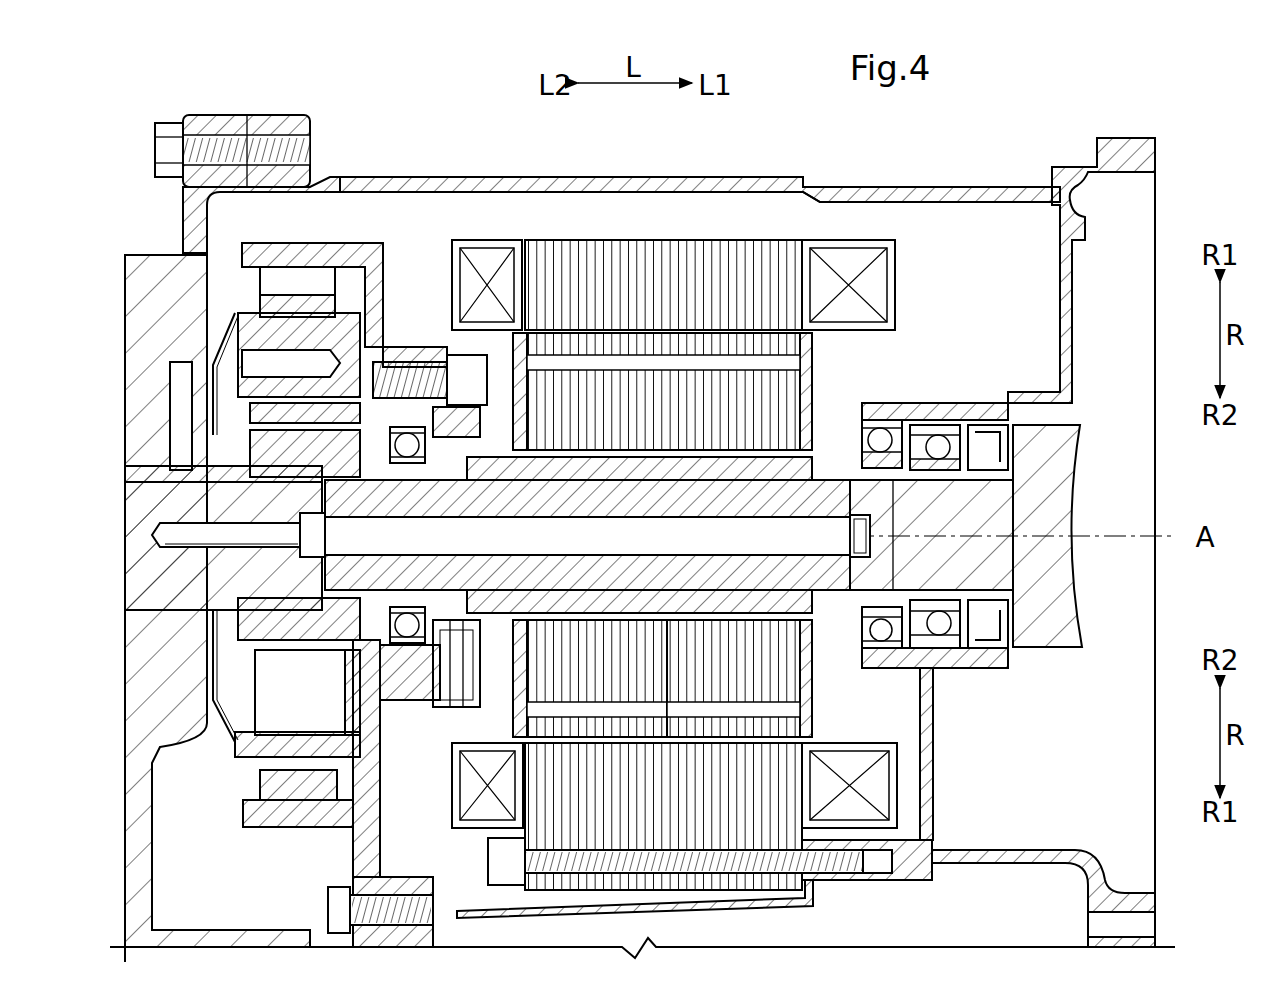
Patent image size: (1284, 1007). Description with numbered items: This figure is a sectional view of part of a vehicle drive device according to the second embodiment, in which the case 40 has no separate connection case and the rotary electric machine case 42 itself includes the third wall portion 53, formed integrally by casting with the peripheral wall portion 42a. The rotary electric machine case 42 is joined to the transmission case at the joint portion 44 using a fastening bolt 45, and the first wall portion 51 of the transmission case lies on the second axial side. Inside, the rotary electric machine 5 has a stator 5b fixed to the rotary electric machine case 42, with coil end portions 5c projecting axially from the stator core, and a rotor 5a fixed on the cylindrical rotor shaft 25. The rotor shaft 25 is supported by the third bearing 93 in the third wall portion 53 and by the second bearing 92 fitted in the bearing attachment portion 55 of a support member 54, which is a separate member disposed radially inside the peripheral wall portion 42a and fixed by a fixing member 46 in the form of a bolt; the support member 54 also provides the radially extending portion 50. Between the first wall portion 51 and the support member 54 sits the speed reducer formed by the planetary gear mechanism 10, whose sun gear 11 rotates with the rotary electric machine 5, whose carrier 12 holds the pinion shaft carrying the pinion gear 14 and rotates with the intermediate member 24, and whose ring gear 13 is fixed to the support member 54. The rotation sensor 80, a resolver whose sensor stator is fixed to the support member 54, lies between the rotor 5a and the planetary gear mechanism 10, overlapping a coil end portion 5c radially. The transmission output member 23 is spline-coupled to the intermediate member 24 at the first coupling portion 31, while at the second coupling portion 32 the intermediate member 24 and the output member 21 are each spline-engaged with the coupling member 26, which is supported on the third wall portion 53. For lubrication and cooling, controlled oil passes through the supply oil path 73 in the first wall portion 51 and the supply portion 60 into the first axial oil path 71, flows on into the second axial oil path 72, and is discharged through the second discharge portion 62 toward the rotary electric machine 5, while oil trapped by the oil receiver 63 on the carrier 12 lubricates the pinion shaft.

The rotary electric machine 5 is at (872, 710).
The rotor 5a is at (815, 385).
The stator 5b is at (640, 238).
The coil end portion 5c is at (460, 800).
The planetary gear mechanism 10 is at (233, 283).
The sun gear 11 is at (320, 652).
The carrier 12 is at (255, 742).
The ring gear 13 is at (305, 778).
The pinion gear 14 is at (310, 272).
The output member 21 is at (1055, 625).
The transmission output member 23 is at (150, 487).
The intermediate member 24 is at (622, 565).
The rotor shaft 25 is at (760, 612).
The coupling member 26 is at (900, 548).
The first coupling portion 31 is at (270, 592).
The second coupling portion 32 is at (860, 592).
The case 40 is at (373, 158).
The rotary electric machine case 42 is at (455, 178).
The peripheral wall portion 42a is at (735, 180).
The joint portion 44 is at (245, 106).
The fastening bolt 45 is at (165, 120).
The fixing member 46 is at (326, 912).
The radially extending portion 50 is at (390, 774).
The first wall portion 51 is at (130, 310).
The third wall portion 53 is at (1072, 320).
The support member 54 is at (395, 325).
The bearing attachment portion 55 is at (405, 667).
The supply portion 60 is at (180, 527).
The second discharge portion 62 is at (520, 490).
The oil receiver 63 is at (200, 720).
The first axial oil path 71 is at (185, 545).
The second axial oil path 72 is at (640, 462).
The supply oil path 73 is at (178, 400).
The rotation sensor 80 is at (472, 685).
The second bearing 92 is at (407, 448).
The third bearing 93 is at (876, 440).